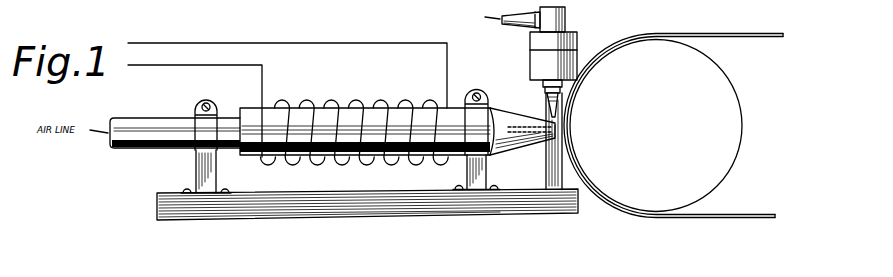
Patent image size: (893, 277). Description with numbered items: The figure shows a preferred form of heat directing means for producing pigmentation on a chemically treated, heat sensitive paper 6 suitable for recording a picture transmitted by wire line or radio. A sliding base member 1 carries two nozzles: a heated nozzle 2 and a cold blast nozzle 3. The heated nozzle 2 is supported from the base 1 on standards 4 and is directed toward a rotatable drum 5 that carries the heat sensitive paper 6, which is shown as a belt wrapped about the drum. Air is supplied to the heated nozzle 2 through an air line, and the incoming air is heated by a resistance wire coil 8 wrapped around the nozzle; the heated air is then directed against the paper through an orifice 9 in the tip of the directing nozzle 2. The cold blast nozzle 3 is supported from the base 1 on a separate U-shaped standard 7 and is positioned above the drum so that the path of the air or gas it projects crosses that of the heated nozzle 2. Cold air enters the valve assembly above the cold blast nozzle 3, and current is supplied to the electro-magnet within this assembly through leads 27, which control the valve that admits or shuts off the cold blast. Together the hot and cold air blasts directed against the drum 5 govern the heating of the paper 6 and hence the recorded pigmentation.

The sliding base member 1 is at (157, 207).
The heated nozzle 2 is at (532, 140).
The cold blast nozzle 3 is at (547, 100).
The standards 4 is at (195, 171).
The drum 5 is at (736, 162).
The heat sensitive paper 6 is at (714, 31).
The U-shaped standard 7 is at (544, 176).
The resistance wire coil 8 is at (340, 163).
The orifice 9 is at (520, 124).
The leads 27 is at (523, 41).